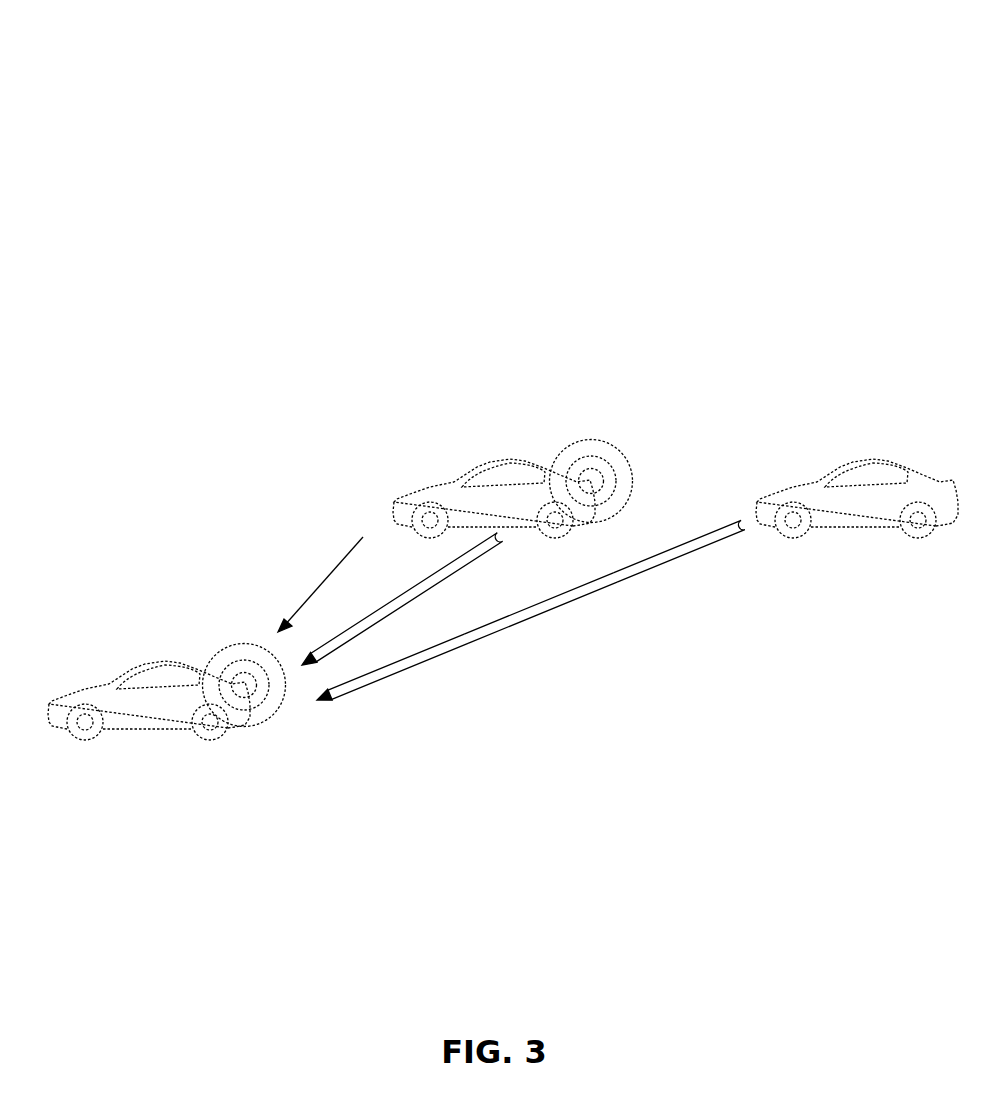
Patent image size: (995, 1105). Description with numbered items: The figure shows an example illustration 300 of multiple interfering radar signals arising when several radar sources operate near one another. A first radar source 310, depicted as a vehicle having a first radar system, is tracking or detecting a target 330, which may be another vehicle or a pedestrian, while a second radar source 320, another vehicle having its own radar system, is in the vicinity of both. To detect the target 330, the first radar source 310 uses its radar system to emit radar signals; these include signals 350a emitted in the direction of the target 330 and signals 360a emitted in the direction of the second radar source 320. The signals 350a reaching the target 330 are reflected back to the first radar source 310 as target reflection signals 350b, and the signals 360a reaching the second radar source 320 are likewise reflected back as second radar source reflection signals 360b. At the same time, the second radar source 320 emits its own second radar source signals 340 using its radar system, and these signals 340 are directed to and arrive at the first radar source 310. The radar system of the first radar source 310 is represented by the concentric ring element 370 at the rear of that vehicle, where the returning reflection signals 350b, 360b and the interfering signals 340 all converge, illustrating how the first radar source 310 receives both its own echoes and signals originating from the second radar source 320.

The vehicle communication environment 300 is at (830, 82).
The first radar source 310 is at (138, 732).
The second radar source 320 is at (503, 460).
The target 330 is at (867, 458).
The second radar source signals 340 is at (313, 587).
The signals emitted in the direction of the target 350a is at (693, 532).
The target reflection signals 350b is at (610, 588).
The signals emitted in the direction of the second radar source 360a is at (423, 575).
The second radar source reflection signals 360b is at (393, 617).
The communication unit / transceiver of first vehicle 370 is at (265, 733).